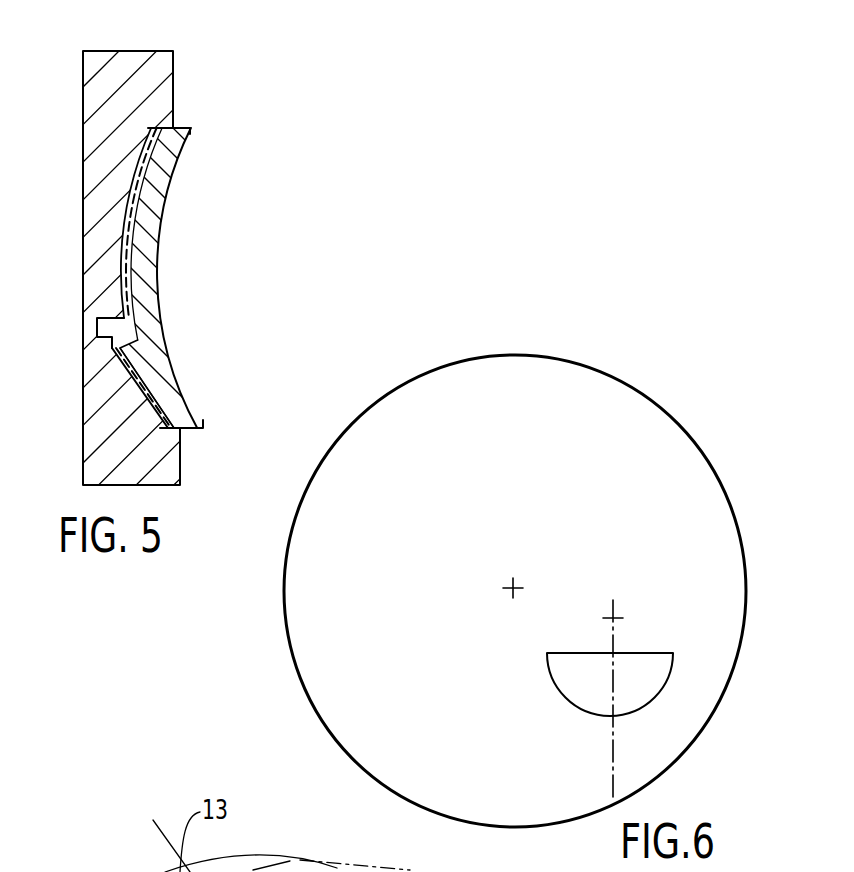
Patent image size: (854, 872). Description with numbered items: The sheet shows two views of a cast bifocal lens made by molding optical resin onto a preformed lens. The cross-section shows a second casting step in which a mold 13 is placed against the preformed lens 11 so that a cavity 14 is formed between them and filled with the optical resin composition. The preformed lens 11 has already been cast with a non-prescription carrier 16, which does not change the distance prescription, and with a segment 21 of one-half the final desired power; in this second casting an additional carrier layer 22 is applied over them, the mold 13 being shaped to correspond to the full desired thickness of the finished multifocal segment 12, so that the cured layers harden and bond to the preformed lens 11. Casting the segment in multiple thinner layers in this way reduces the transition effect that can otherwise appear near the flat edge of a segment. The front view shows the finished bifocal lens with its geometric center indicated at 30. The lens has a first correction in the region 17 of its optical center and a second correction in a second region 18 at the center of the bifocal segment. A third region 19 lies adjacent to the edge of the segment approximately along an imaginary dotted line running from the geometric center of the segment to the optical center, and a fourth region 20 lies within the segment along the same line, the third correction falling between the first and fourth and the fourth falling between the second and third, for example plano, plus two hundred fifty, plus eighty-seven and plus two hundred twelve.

In FIG. 5, the preformed lens 11 is at (260, 255).
In FIG. 5, the multifocal segment 12 is at (110, 355).
In FIG. 5, the mold 13 is at (160, 78).
In FIG. 5, the cavity 14 is at (96, 325).
In FIG. 5, the carrier layer 16 is at (148, 193).
In FIG. 6, the first region 17 is at (621, 609).
In FIG. 6, the second region 18 is at (622, 690).
In FIG. 6, the third region 19 is at (618, 643).
In FIG. 6, the fourth region 20 is at (615, 673).
In FIG. 5, the segment 21 is at (135, 345).
In FIG. 5, the additional carrier layer 22 is at (135, 238).
In FIG. 6, the geometric center of the lens 30 is at (517, 587).